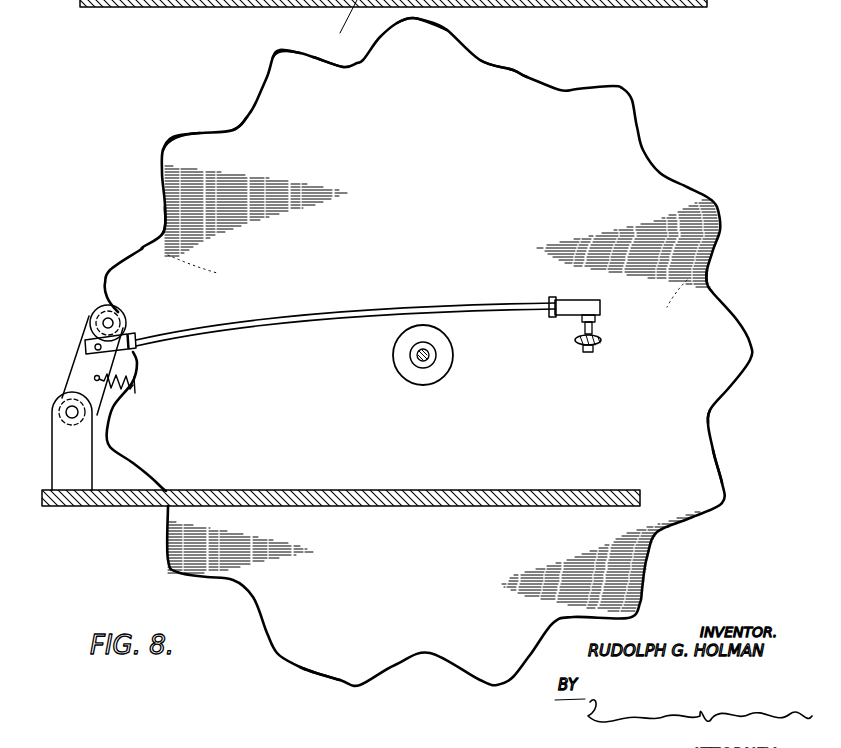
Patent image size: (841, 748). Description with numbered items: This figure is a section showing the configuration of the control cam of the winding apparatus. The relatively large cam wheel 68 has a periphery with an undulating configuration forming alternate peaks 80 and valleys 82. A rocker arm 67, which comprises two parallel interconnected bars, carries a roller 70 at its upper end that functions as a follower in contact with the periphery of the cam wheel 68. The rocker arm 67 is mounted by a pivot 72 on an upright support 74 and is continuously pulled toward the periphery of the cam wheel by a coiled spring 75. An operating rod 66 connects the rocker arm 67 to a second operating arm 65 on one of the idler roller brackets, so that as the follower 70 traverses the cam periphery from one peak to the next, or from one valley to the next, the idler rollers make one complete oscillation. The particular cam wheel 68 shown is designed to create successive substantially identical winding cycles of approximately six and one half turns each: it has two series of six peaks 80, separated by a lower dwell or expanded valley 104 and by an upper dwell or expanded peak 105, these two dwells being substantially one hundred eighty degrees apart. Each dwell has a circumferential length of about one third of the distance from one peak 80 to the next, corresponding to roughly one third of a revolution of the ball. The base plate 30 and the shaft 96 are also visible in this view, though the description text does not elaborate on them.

The base plate 30 is at (117, 508).
The second operating arm 65 is at (598, 338).
The operating rod 66 is at (392, 310).
The rocker arm 67 is at (80, 368).
The cam wheel 68 is at (645, 150).
The roller 70 is at (100, 315).
The pivot 72 is at (70, 410).
The upright support 74 is at (62, 445).
The coiled spring 75 is at (137, 386).
The peaks 80 is at (279, 52).
The valleys 82 is at (247, 117).
The shaft 96 is at (423, 355).
The lower dwell 104 is at (527, 77).
The upper dwell 105 is at (315, 672).